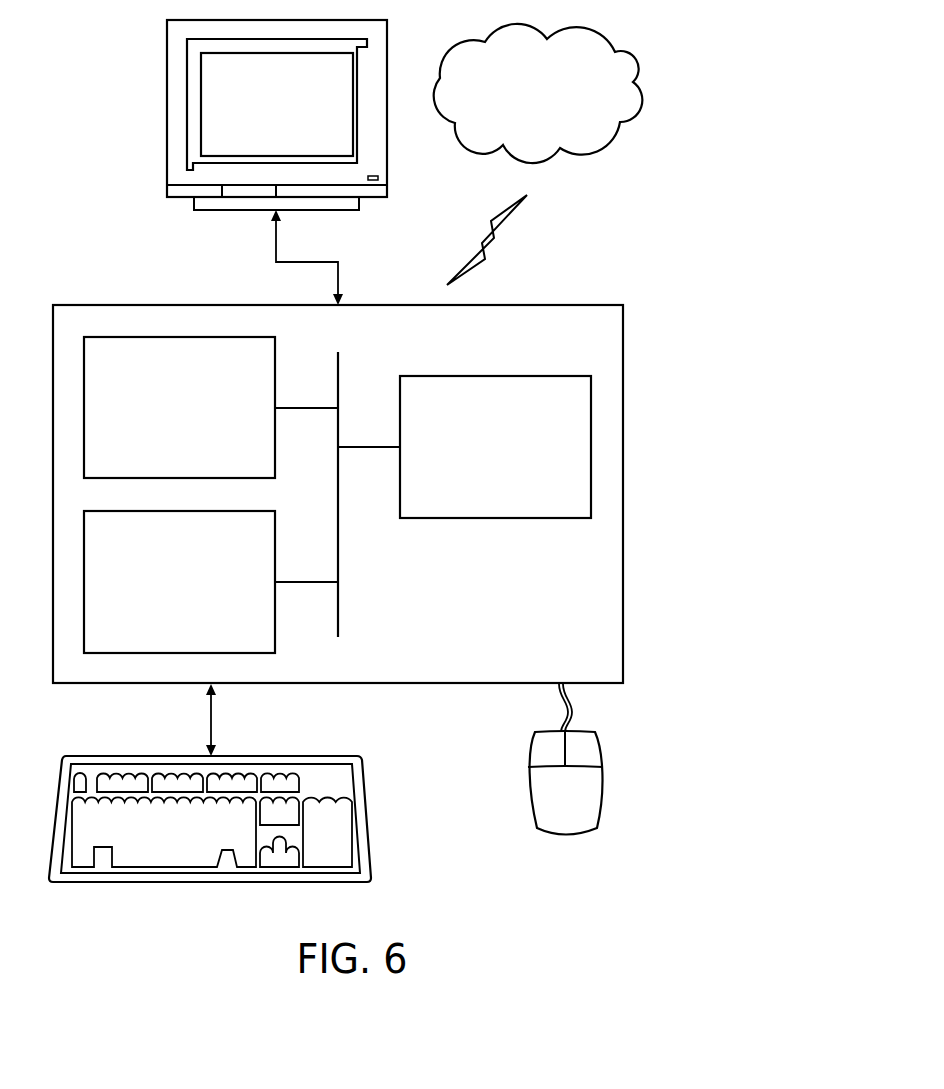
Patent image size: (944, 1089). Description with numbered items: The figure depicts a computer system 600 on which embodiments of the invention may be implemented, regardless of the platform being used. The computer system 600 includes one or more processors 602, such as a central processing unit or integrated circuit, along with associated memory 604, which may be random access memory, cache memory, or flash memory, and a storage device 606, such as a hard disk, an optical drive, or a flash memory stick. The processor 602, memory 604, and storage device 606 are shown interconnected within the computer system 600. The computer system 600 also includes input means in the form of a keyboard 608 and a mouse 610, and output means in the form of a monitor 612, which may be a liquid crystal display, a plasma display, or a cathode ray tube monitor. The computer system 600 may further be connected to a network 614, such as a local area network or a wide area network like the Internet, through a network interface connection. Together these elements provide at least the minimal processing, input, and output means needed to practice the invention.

The computer system 600 is at (672, 238).
The processor 602 is at (477, 470).
The memory 604 is at (160, 431).
The storage device 606 is at (160, 605).
The keyboard 608 is at (149, 864).
The mouse 610 is at (547, 817).
The monitor 612 is at (256, 122).
The network 614 is at (520, 116).